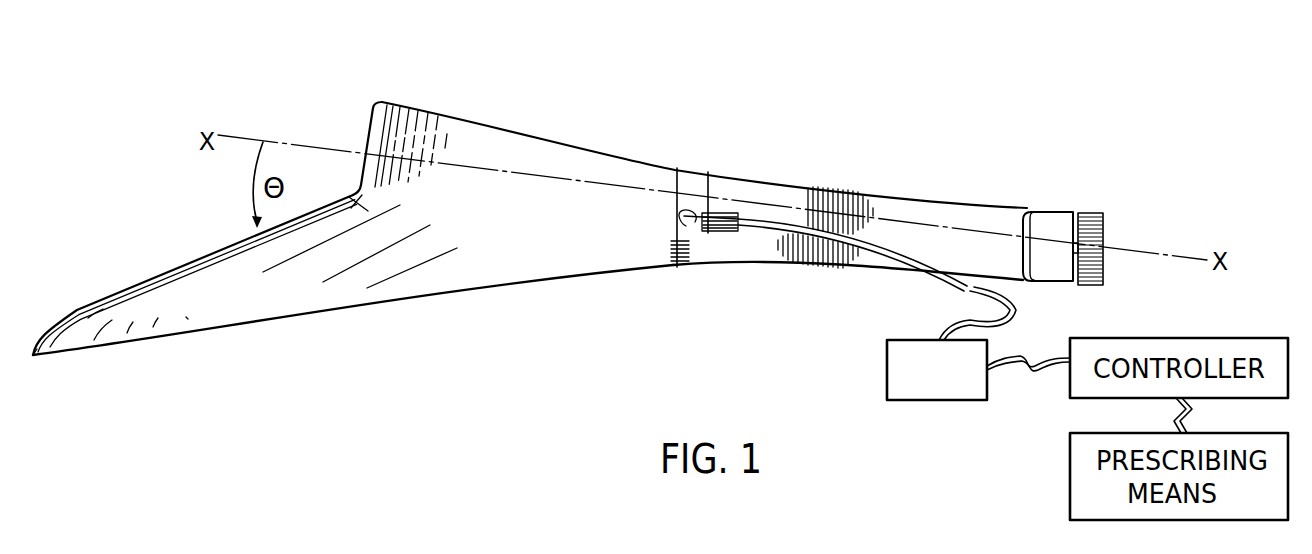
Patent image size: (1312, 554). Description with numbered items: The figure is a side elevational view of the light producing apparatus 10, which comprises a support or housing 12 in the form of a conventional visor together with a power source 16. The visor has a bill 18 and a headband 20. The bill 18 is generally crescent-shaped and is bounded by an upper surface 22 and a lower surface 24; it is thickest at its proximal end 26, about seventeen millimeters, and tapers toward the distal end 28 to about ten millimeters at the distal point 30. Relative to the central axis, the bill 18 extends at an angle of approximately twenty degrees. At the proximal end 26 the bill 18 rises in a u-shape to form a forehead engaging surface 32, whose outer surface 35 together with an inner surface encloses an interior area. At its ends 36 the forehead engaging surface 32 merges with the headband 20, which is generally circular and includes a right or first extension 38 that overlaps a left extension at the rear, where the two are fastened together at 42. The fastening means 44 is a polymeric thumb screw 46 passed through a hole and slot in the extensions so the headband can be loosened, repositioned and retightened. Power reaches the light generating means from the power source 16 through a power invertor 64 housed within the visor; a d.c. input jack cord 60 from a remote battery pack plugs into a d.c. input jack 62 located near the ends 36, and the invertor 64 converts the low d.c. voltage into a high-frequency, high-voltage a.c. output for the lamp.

The light producing apparatus 10 is at (257, 115).
The support or housing 12 is at (546, 237).
The power source 16 is at (937, 400).
The bill 18 is at (233, 305).
The headband 20 is at (950, 208).
The upper surface 22 is at (200, 255).
The lower surface 24 is at (303, 318).
The proximal end 26 is at (363, 207).
The distal end 28 is at (100, 308).
The distal point 30 is at (33, 357).
The forehead engaging surface 32 is at (382, 112).
The outer surface 35 is at (368, 142).
The ends 36 is at (668, 235).
The right or first extension 38 is at (855, 258).
The fastening location 42 is at (1069, 206).
The fastening means 44 is at (1109, 208).
The thumb screw 46 is at (1107, 238).
The d.c. input jack cord 60 is at (946, 277).
The d.c. input jack 62 is at (684, 228).
The power invertor 64 is at (393, 544).